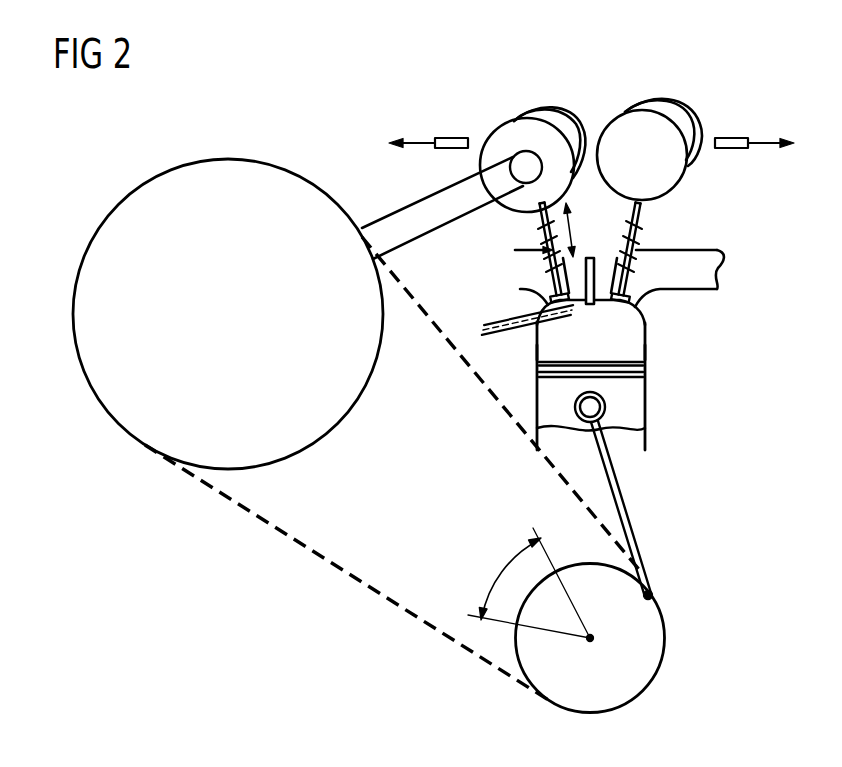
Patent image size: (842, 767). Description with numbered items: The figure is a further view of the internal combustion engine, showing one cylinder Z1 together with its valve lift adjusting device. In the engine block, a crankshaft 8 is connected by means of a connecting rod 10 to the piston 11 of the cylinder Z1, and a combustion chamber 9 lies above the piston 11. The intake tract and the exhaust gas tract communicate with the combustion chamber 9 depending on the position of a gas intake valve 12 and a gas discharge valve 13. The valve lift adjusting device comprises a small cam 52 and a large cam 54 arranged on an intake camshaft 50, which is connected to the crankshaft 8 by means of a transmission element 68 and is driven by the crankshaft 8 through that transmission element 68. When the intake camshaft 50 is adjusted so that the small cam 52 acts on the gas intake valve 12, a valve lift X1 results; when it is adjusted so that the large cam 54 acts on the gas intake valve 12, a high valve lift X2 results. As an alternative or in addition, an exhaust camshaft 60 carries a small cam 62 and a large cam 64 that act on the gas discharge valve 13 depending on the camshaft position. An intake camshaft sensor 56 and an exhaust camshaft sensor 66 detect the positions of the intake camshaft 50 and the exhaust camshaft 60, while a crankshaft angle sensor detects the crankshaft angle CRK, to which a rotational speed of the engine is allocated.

The crankshaft 8 is at (657, 648).
The combustion chamber 9 is at (636, 352).
The connecting rod 10 is at (631, 524).
The piston 11 is at (640, 402).
The gas intake valve 12 is at (540, 240).
The gas discharge valve 13 is at (647, 226).
The intake camshaft 50 is at (521, 130).
The small cam 52 is at (542, 109).
The large cam 54 is at (573, 112).
The intake camshaft sensor 56 is at (448, 139).
The exhaust camshaft 60 is at (628, 122).
The small cam 62 is at (670, 102).
The large cam 64 is at (695, 110).
The exhaust camshaft sensor 66 is at (733, 138).
The transmission element 68 is at (113, 413).
The valve lift X1 is at (512, 308).
The high valve lift X2 is at (523, 353).
The cylinder Z1 is at (658, 339).
The crankshaft angle CRK is at (500, 568).